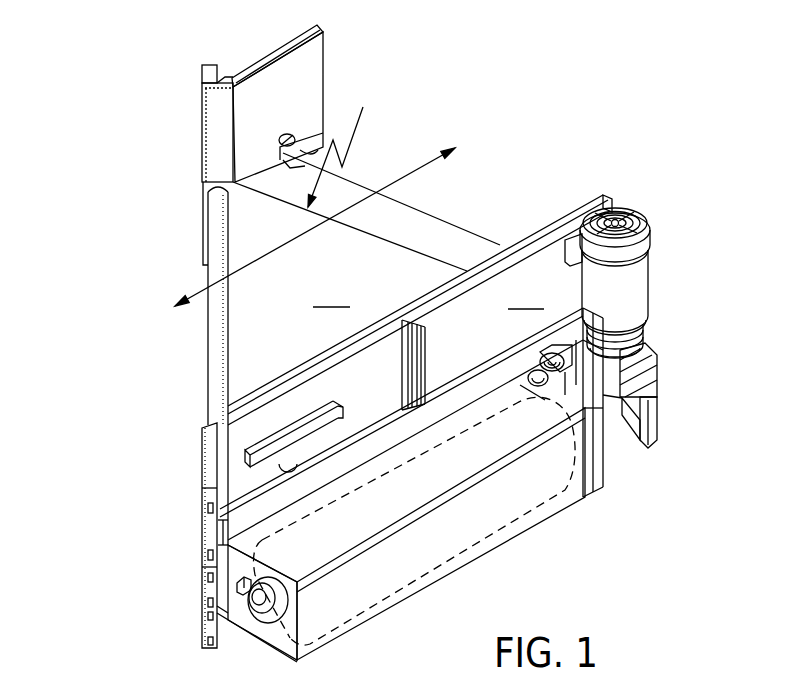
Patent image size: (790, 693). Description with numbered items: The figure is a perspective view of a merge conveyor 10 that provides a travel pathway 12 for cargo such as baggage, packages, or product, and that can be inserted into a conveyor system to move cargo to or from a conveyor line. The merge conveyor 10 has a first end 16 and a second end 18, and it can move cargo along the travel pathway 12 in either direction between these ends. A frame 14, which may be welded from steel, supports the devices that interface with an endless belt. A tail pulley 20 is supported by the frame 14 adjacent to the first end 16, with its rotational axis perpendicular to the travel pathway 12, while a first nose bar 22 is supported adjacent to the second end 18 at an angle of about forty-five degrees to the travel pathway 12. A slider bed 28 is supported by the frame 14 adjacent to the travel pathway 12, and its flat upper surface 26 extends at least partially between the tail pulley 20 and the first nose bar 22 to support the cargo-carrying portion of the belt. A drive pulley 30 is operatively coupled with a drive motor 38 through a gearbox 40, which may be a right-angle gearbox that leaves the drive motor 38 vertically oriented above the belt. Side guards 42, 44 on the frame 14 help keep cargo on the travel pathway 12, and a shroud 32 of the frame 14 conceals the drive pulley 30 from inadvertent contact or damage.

The merge conveyor 10 is at (310, 326).
The travel pathway 12 is at (413, 168).
The frame 14 is at (203, 236).
The first end 16 is at (420, 271).
The second end 18 is at (152, 523).
The tail pulley 20 is at (450, 222).
The first nose bar 22 is at (210, 352).
The surface 26 is at (331, 294).
The slider bed 28 is at (345, 145).
The drive pulley 30 is at (478, 540).
The shroud 32 is at (307, 648).
The drive motor 38 is at (640, 283).
The gearbox 40 is at (655, 367).
The side guard 42 is at (280, 75).
The side guard 44 is at (526, 296).